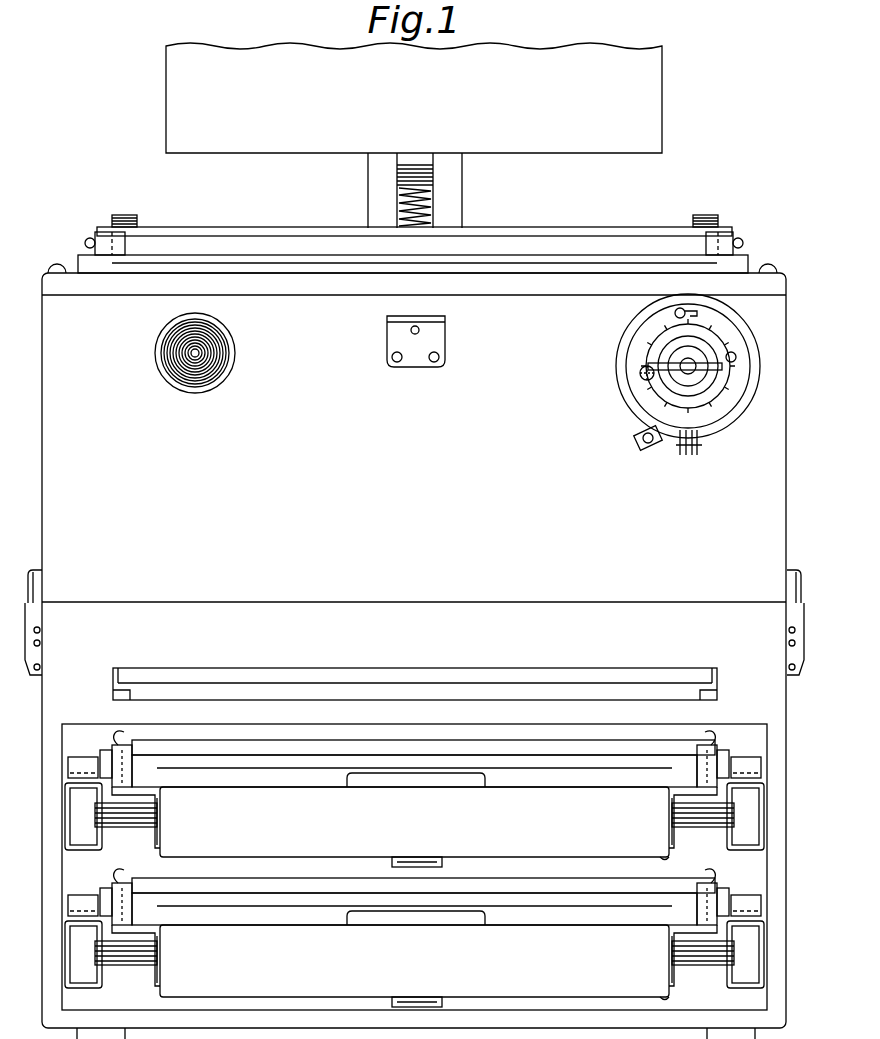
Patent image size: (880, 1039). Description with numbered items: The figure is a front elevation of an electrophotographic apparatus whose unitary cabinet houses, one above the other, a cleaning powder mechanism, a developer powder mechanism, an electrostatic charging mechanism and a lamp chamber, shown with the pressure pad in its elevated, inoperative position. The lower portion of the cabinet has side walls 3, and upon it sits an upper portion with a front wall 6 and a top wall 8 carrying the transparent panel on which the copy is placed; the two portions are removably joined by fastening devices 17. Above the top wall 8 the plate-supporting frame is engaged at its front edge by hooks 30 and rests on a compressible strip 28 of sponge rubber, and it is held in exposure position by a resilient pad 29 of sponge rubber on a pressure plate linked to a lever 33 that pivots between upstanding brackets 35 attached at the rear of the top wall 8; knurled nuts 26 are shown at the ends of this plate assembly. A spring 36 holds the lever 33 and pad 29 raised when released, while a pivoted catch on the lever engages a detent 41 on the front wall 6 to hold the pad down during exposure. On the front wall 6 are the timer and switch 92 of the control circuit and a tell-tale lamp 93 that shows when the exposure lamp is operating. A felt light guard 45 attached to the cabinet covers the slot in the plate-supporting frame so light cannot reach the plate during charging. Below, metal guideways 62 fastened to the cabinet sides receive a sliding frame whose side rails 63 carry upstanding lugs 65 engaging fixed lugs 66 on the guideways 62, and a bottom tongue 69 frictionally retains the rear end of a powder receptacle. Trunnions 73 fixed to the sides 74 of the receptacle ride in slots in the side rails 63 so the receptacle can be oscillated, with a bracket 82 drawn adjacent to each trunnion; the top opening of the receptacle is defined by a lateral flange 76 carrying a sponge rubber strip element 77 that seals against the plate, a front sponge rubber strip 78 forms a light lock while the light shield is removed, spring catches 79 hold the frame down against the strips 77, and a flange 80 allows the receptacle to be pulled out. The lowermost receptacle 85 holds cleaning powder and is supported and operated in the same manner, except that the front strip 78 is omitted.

The side walls 3 is at (788, 776).
The front wall 6 is at (770, 490).
The top wall 8 is at (115, 285).
The fastening devices 17 is at (28, 566).
The knurled nut 26 is at (128, 213).
The strip 28 is at (330, 258).
The resilient pad 29 is at (652, 111).
The hooks 30 is at (115, 240).
The lever 33 is at (415, 160).
The upstanding brackets 35 is at (458, 181).
The spring 36 is at (428, 204).
The detent 41 is at (442, 316).
The felt light guard 45 is at (405, 676).
The guideways 62 is at (65, 797).
The side rails 63 is at (414, 885).
The upstanding lugs 65 is at (105, 752).
The fixed lugs 66 is at (83, 757).
The bottom tongue 69 is at (443, 867).
The trunnions 73 is at (136, 818).
The sides 74 is at (668, 855).
The lateral flange 76 is at (249, 748).
The sponge rubber strip element 77 is at (300, 761).
The sponge rubber strip 78 is at (305, 786).
The spring catches 79 is at (126, 742).
The flange 80 is at (458, 778).
The bracket 82 is at (122, 832).
The receptacle 85 is at (660, 991).
The timer and switch 92 is at (738, 413).
The tell-tale lamp 93 is at (222, 355).